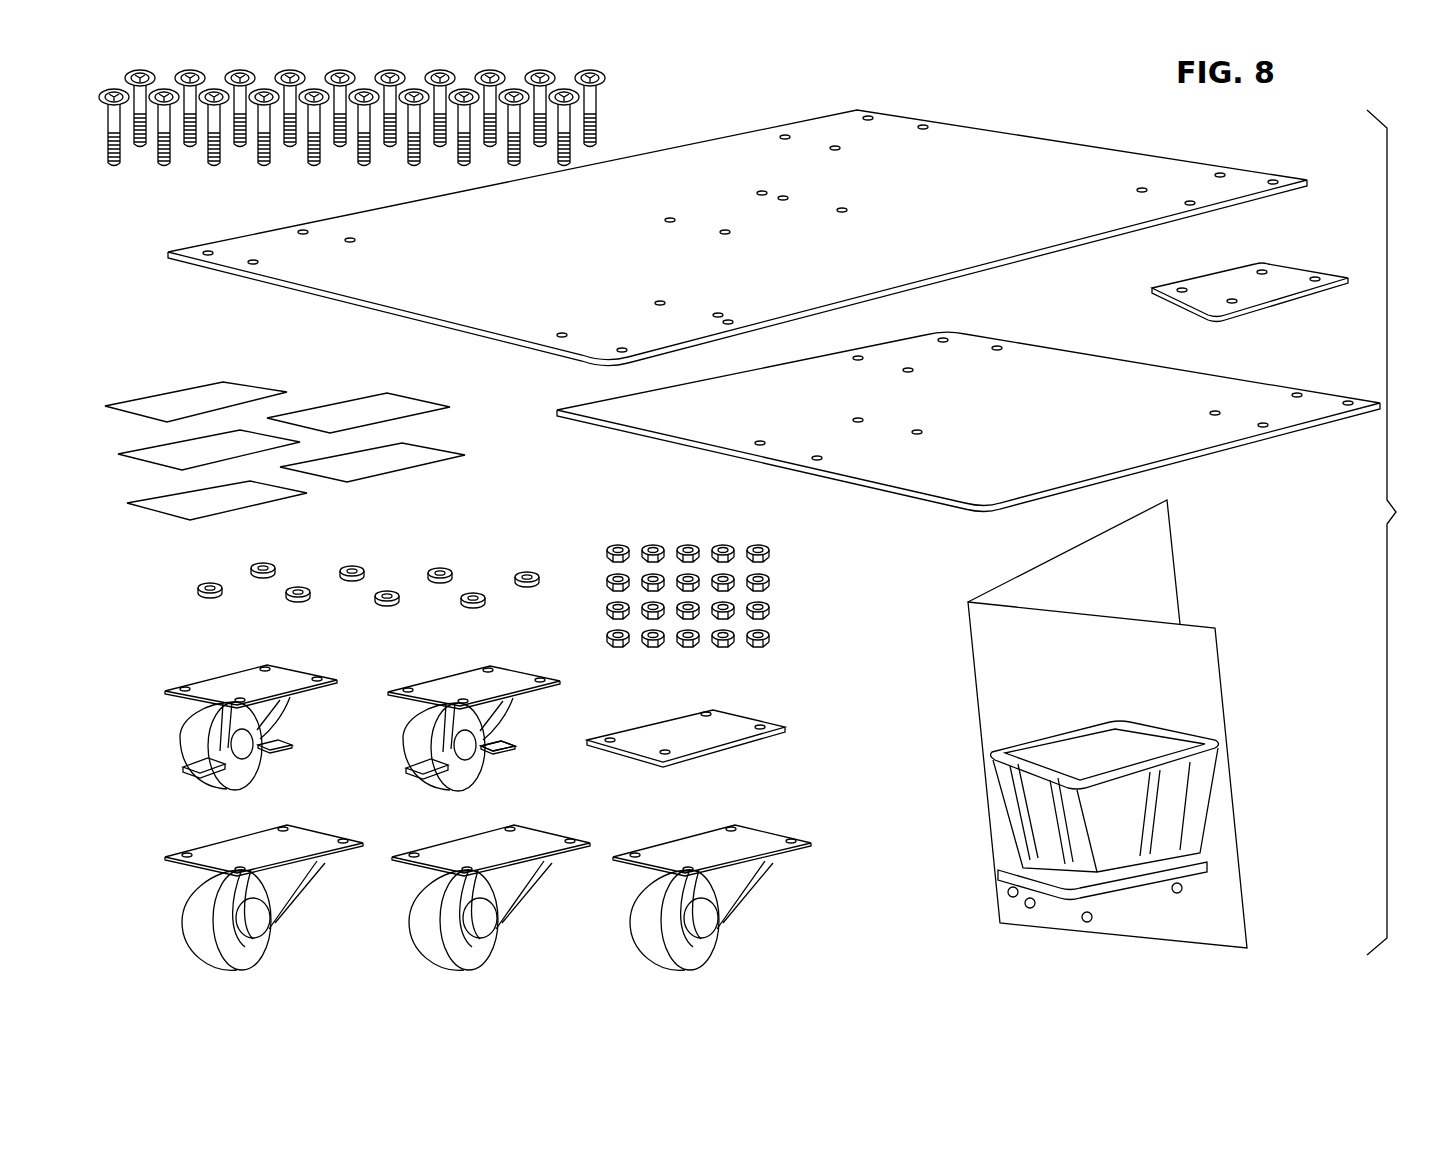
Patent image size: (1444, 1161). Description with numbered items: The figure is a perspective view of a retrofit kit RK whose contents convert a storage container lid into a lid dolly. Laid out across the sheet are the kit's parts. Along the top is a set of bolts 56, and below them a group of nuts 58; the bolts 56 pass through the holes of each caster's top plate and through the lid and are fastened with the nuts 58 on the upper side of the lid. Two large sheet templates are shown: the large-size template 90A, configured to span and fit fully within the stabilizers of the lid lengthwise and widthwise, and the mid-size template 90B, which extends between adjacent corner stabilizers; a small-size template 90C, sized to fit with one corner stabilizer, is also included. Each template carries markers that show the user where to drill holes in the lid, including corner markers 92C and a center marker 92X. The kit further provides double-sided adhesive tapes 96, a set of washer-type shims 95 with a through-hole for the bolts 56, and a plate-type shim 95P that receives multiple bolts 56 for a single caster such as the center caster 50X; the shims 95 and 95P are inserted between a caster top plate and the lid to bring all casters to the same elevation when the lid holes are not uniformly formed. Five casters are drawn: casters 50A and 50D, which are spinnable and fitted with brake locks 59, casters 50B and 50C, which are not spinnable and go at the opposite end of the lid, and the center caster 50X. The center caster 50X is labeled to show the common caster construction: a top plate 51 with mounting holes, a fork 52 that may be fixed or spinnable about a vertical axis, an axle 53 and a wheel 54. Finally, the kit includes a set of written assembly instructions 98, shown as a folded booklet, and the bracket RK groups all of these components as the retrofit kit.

The bolts 56 is at (503, 122).
The large-size template 90A is at (1007, 128).
The mid-size template 90B is at (1178, 370).
The small-size template 90C is at (1278, 262).
The corner markers 92C is at (835, 146).
The center marker 92X is at (838, 198).
The double-sided adhesive tapes 96 is at (338, 398).
The shims 95 is at (387, 590).
The plate-type shim 95P is at (740, 712).
The nuts 58 is at (688, 548).
The brake lock 59 is at (508, 744).
The assembly instructions 98 is at (1157, 557).
The retrofit kit RK is at (1404, 532).
The caster 50A is at (203, 780).
The caster 50D is at (452, 742).
The caster 50B is at (200, 935).
The caster 50C is at (425, 935).
The center caster 50X is at (698, 879).
The top plate 51 is at (750, 838).
The fork 52 is at (738, 886).
The axle 53 is at (703, 927).
The wheel 54 is at (700, 954).